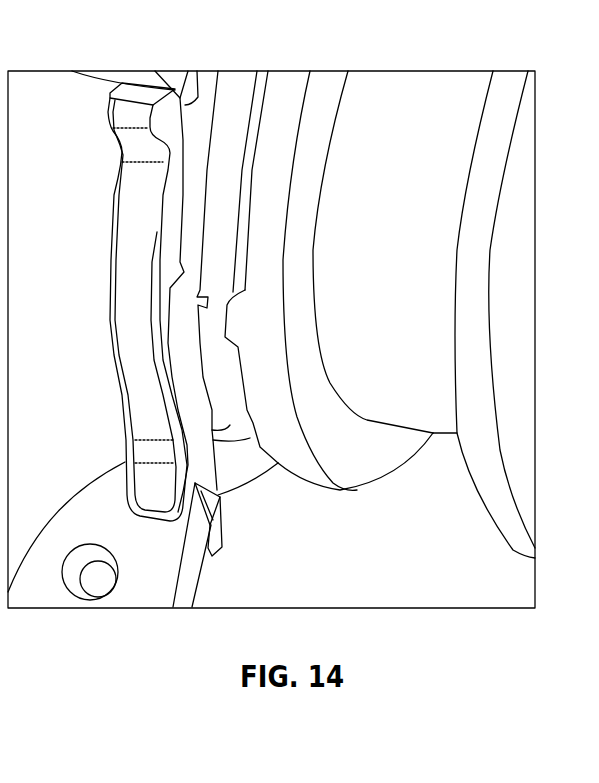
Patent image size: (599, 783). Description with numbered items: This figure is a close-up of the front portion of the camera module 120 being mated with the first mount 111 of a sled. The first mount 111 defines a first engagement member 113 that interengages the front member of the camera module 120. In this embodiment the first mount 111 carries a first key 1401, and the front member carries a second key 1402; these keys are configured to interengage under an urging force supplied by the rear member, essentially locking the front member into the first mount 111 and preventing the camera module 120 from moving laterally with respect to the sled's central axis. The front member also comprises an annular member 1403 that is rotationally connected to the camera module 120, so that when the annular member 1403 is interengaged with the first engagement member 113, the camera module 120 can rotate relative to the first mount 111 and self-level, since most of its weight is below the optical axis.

The first mount 111 is at (125, 287).
The first engagement member 113 is at (207, 100).
The camera module 120 is at (233, 92).
The first key 1401 is at (172, 322).
The second key 1402 is at (223, 337).
The annular member 1403 is at (283, 100).